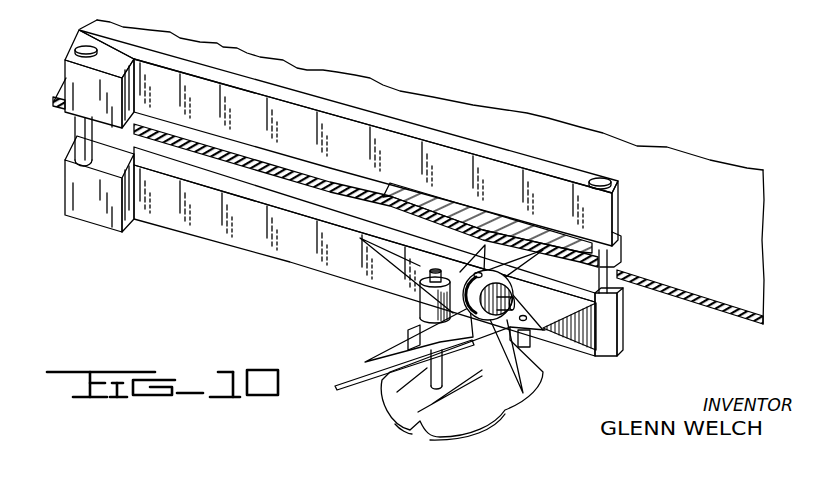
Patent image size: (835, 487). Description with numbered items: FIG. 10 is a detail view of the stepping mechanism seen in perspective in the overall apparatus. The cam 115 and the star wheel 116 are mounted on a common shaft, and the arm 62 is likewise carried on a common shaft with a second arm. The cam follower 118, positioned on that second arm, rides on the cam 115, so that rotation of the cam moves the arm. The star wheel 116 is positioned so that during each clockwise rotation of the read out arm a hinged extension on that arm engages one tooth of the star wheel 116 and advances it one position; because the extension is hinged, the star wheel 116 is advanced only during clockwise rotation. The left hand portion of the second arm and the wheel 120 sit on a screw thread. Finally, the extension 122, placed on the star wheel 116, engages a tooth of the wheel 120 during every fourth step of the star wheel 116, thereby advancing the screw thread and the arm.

The arm 62 is at (600, 217).
The cam 115 is at (397, 400).
The star wheel 116 is at (390, 356).
The cam follower 118 is at (555, 347).
The wheel 120 is at (380, 288).
The extension 122 is at (417, 320).